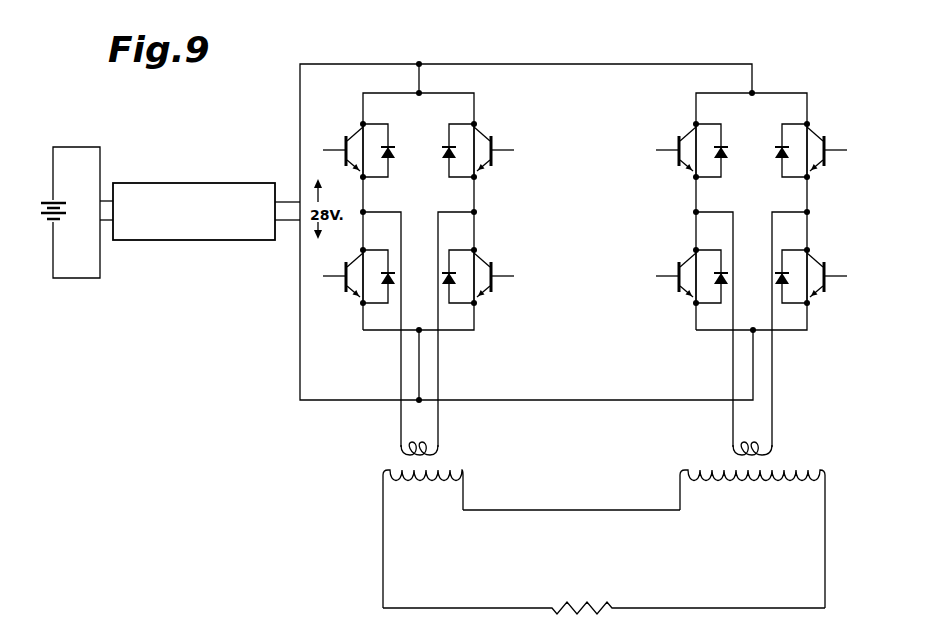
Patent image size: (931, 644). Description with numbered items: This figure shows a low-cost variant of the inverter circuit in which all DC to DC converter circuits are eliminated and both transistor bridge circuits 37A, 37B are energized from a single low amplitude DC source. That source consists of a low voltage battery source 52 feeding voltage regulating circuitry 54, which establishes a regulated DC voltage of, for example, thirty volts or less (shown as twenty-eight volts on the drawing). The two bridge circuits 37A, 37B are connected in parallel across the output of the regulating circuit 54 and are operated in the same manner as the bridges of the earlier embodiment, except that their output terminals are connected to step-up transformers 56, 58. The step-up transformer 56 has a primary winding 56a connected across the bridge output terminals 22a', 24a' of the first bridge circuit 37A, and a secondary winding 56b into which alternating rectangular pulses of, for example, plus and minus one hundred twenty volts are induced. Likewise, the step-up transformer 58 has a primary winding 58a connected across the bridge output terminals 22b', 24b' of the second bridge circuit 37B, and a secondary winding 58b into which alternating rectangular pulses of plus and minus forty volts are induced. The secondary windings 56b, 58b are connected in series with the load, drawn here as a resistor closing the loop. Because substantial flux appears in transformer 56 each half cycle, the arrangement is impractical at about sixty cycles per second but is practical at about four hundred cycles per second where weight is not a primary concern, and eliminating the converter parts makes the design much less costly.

The low voltage battery source 52 is at (62, 206).
The voltage regulating circuitry 54 is at (188, 183).
The bridge circuit 37A is at (492, 100).
The bridge circuit 37B is at (694, 85).
The bridge output terminal 22a' is at (391, 316).
The bridge output terminal 24a' is at (487, 316).
The bridge output terminal 22b' is at (681, 316).
The bridge output terminal 24b' is at (820, 316).
The step-up transformer 56 is at (397, 513).
The primary winding 56a is at (424, 449).
The secondary winding 56b is at (407, 478).
The step-up transformer 58 is at (723, 507).
The primary winding 58a is at (752, 449).
The secondary winding 58b is at (738, 476).